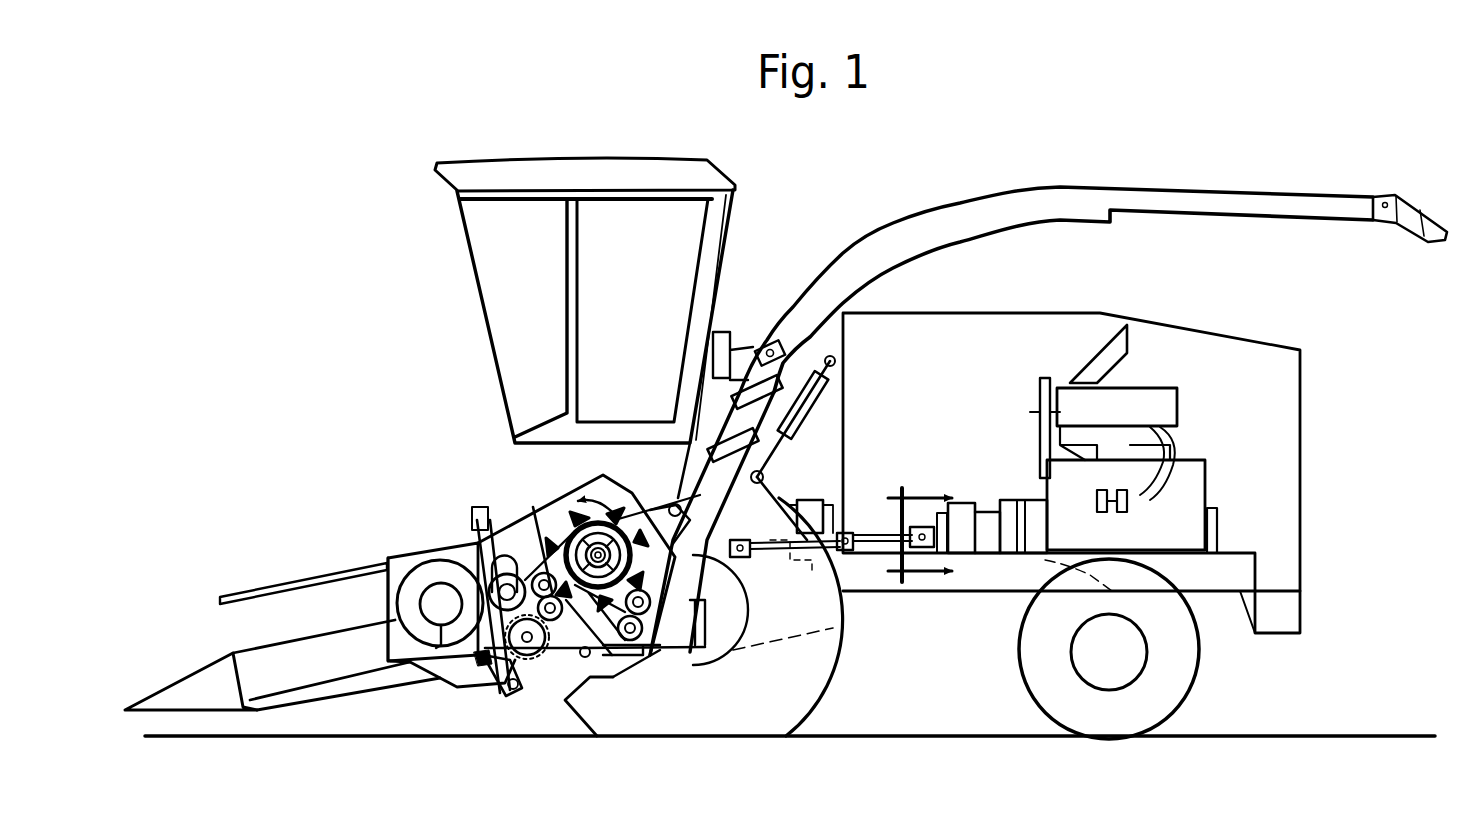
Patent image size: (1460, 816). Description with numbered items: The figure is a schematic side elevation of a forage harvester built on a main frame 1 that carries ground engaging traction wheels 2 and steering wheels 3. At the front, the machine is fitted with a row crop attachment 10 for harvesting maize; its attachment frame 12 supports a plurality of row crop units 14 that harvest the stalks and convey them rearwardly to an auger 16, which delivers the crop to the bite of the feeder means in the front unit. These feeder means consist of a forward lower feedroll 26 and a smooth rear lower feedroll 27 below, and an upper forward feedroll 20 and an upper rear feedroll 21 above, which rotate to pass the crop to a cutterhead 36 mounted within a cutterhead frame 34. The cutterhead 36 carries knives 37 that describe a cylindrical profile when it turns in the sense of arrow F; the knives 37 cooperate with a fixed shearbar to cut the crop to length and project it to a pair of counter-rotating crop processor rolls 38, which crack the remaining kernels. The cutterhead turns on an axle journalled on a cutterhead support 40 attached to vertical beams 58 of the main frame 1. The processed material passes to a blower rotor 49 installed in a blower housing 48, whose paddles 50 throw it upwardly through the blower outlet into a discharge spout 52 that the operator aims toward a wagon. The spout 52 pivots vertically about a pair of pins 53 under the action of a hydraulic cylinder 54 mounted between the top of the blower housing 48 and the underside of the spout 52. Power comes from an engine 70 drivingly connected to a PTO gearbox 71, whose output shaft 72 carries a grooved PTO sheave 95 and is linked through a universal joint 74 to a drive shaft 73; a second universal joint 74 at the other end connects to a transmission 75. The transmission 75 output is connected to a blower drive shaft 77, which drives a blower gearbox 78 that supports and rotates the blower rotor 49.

The main frame 1 is at (967, 645).
The ground engaging traction wheels 2 is at (788, 707).
The steering wheels 3 is at (1026, 680).
The row crop attachment 10 is at (292, 562).
The attachment frame 12 is at (447, 668).
The row crop units 14 is at (272, 677).
The auger 16 is at (412, 567).
The upper forward feedroll 20 is at (463, 560).
The upper rear feedroll 21 is at (540, 562).
The forward lower feedroll 26 is at (505, 662).
The rear lower feedroll 27 is at (553, 667).
The cutterhead frame 34 is at (500, 496).
The cutterhead 36 is at (550, 523).
The knives 37 is at (582, 490).
The crop processor rolls 38 is at (647, 655).
The cutterhead support 40 is at (662, 500).
The blower housing 48 is at (720, 640).
The blower rotor 49 is at (706, 620).
The paddles 50 is at (727, 533).
The discharge spout 52 is at (1029, 176).
The pins 53 is at (778, 353).
The hydraulic cylinder 54 is at (803, 410).
The vertical beams 58 is at (737, 330).
The engine 70 is at (1208, 465).
The PTO gearbox 71 is at (1010, 503).
The output shaft 72 is at (921, 526).
The drive shaft 73 is at (858, 560).
The universal joint 74 is at (957, 557).
The transmission 75 is at (847, 500).
The blower drive shaft 77 is at (784, 510).
The blower gearbox 78 is at (700, 566).
The grooved PTO sheave 95 is at (960, 505).